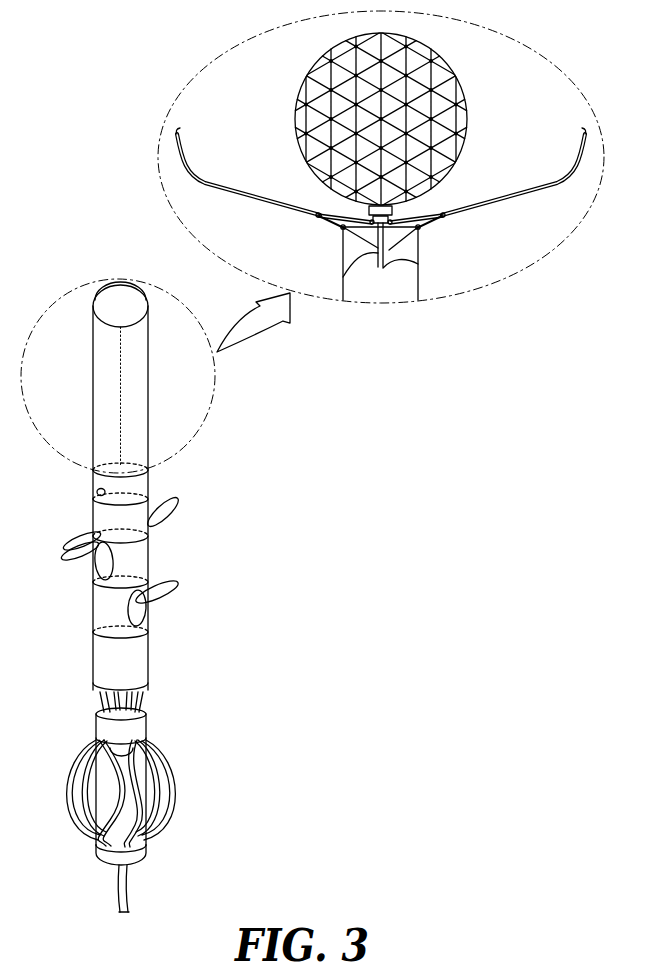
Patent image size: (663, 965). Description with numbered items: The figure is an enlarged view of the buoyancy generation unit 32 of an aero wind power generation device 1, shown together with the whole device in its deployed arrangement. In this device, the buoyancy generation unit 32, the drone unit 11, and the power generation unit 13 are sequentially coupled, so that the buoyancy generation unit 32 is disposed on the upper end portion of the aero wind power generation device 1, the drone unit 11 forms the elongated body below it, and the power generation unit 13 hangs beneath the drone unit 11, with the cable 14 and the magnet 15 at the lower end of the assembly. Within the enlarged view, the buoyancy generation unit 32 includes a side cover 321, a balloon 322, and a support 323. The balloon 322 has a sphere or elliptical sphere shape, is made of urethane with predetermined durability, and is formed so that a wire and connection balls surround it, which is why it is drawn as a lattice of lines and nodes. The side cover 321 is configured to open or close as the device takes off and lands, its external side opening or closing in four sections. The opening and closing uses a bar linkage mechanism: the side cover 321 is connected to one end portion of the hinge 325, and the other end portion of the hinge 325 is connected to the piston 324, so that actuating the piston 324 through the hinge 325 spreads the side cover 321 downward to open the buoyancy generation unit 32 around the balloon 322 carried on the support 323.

The aero wind power generation device 1 is at (31, 250).
The drone unit 11 is at (212, 571).
The power generation unit 13 is at (197, 794).
The cable 14 is at (125, 889).
The magnet 15 is at (102, 853).
The buoyancy generation unit 32 is at (195, 392).
The side cover 321 is at (228, 187).
The balloon 322 is at (465, 108).
The support 323 is at (392, 211).
The piston 324 is at (360, 254).
The hinge 325 is at (440, 224).